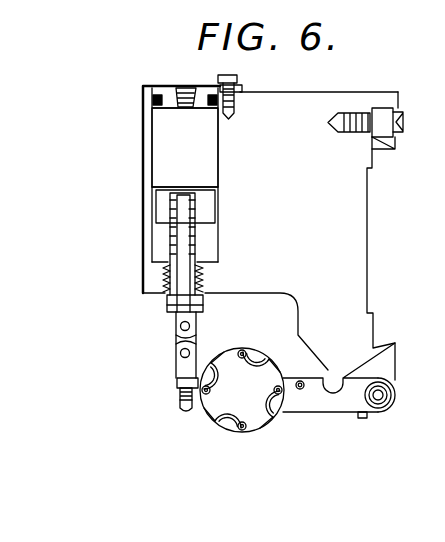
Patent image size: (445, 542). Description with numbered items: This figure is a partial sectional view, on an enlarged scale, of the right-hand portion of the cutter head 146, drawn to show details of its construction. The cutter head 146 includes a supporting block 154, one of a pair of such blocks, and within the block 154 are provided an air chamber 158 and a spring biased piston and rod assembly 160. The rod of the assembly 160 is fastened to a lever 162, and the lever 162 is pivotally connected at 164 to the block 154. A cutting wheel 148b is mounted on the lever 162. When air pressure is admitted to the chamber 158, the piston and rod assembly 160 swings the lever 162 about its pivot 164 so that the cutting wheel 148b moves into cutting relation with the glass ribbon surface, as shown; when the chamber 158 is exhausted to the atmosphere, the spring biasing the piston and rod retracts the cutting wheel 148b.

The cutter head 146 is at (140, 98).
The supporting block 154 is at (311, 92).
The air chamber 158 is at (163, 127).
The spring biased piston and rod assembly 160 is at (153, 297).
The cutting wheel 148b is at (262, 433).
The lever 162 is at (328, 413).
The pivotal connection 164 is at (380, 397).